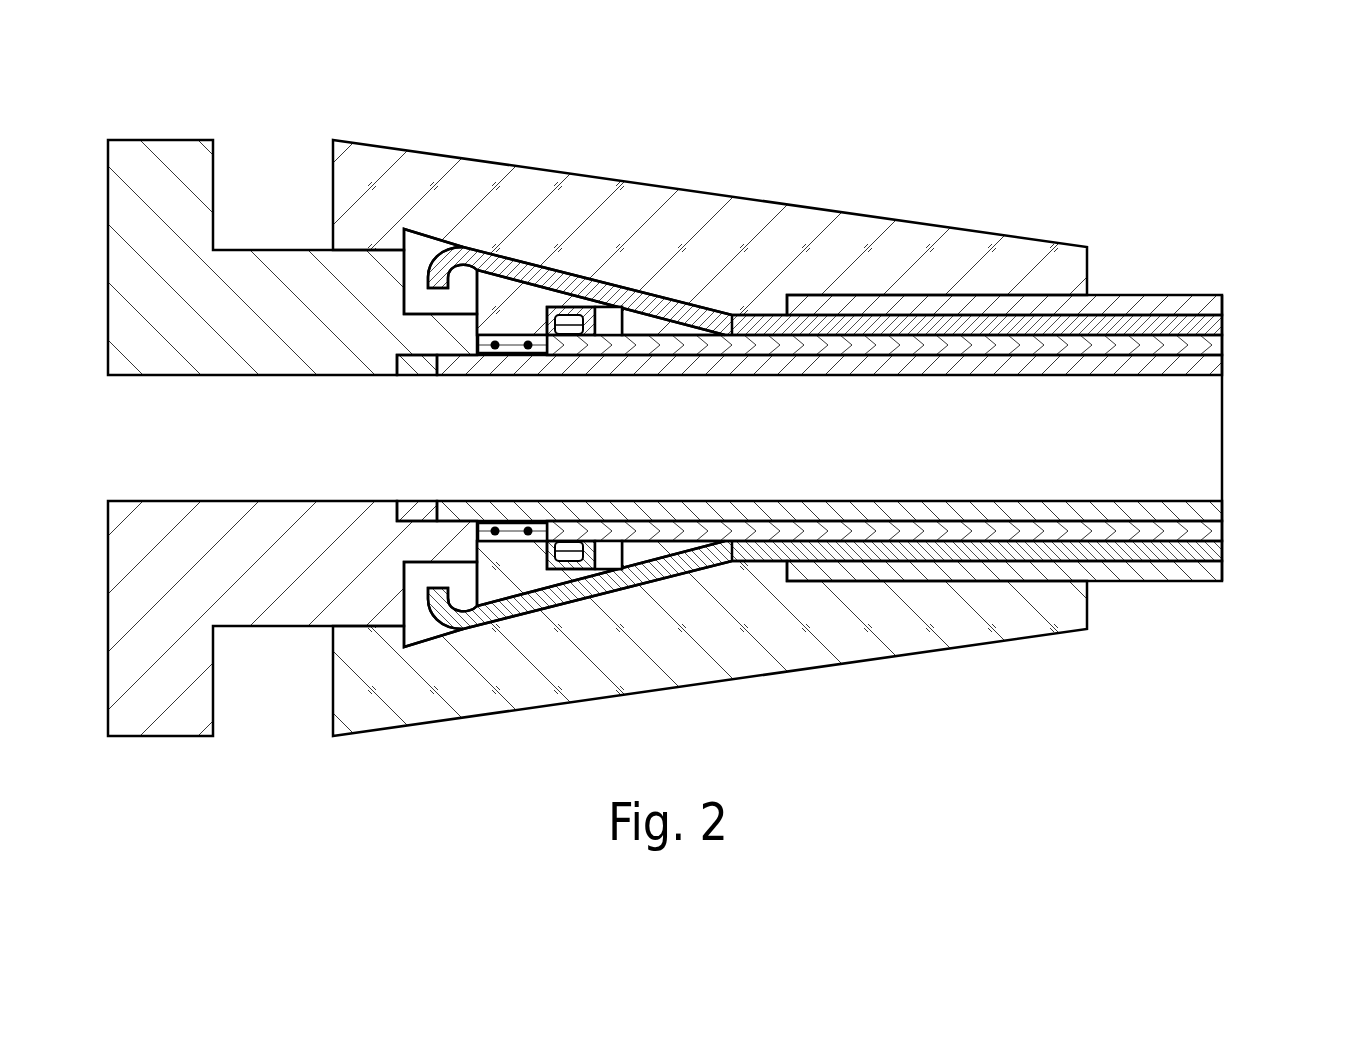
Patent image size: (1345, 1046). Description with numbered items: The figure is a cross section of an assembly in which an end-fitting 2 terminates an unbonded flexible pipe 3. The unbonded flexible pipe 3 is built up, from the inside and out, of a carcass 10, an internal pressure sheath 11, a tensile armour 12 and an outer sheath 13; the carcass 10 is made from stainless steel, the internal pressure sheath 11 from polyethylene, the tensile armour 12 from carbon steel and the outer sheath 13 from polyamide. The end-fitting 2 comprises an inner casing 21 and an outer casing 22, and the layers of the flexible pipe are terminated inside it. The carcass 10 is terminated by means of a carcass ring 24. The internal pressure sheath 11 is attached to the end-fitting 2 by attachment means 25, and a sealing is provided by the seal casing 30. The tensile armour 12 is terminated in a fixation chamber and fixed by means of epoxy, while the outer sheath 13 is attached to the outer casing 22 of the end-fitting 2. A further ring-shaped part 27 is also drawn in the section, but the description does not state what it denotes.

The end-fitting 2 is at (648, 163).
The unbonded flexible pipe 3 is at (1163, 285).
The carcass 10 is at (1223, 508).
The internal pressure sheath 11 is at (1223, 530).
The tensile armour 12 is at (1223, 548).
The outer sheath 13 is at (1150, 582).
The inner casing 21 is at (212, 377).
The outer casing 22 is at (440, 155).
The carcass ring 24 is at (418, 377).
The attachment means 25 is at (512, 347).
The clamping ring 27 is at (420, 622).
The seal casing 30 is at (570, 336).